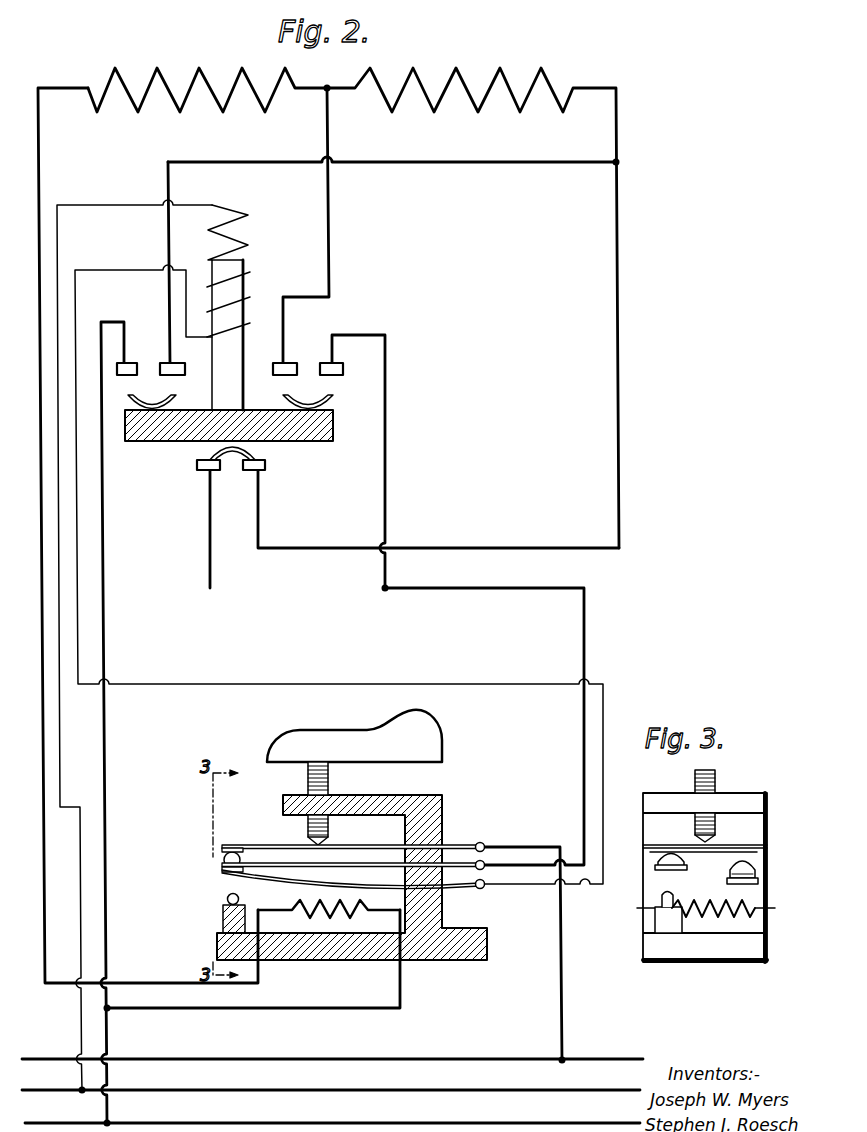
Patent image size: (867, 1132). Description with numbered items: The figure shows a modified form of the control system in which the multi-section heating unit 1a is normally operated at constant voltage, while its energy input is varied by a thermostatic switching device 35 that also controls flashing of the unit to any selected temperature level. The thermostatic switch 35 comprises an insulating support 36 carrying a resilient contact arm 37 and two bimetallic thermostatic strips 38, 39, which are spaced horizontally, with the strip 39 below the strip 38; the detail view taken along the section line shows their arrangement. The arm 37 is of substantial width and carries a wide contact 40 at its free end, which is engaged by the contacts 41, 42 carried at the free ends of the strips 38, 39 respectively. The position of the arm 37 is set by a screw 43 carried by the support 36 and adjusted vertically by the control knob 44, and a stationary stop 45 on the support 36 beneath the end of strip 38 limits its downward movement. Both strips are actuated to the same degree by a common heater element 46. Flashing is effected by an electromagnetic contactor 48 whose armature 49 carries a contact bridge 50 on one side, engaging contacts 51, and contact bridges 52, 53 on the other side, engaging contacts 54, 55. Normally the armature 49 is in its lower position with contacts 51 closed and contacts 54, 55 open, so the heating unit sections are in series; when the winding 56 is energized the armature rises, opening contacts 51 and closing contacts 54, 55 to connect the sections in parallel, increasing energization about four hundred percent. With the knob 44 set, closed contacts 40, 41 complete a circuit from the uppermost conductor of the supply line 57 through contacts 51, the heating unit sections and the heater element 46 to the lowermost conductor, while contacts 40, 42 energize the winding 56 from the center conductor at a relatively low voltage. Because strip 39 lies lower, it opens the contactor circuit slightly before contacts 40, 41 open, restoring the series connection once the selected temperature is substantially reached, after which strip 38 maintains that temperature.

In FIG. 2, the multi-section heating unit 1a is at (296, 86).
In FIG. 2, the thermostatic switching device 35 is at (480, 795).
In FIG. 2, the insulating support 36 is at (443, 914).
In FIG. 3, the insulating support 36 is at (768, 813).
In FIG. 2, the resilient contact arm 37 is at (361, 841).
In FIG. 2, the thermostatic strip 38 is at (306, 866).
In FIG. 3, the thermostatic strip 38 is at (667, 872).
In FIG. 2, the thermostatic strip 39 is at (286, 880).
In FIG. 3, the thermostatic strip 39 is at (741, 880).
In FIG. 2, the contact 40 is at (220, 850).
In FIG. 3, the contact 40 is at (762, 851).
In FIG. 2, the contact 41 is at (225, 856).
In FIG. 3, the contact 41 is at (664, 858).
In FIG. 2, the contact 42 is at (226, 869).
In FIG. 3, the contact 42 is at (748, 874).
In FIG. 2, the screw 43 is at (330, 790).
In FIG. 3, the screw 43 is at (716, 772).
In FIG. 2, the control knob 44 is at (326, 733).
In FIG. 2, the stationary stop 45 is at (231, 896).
In FIG. 3, the stationary stop 45 is at (660, 913).
In FIG. 2, the heater element 46 is at (352, 912).
In FIG. 3, the heater element 46 is at (708, 918).
In FIG. 2, the electromagnetic contactor 48 is at (296, 259).
In FIG. 2, the armature 49 is at (292, 442).
In FIG. 2, the contact bridge 50 is at (207, 453).
In FIG. 2, the contacts 51 is at (245, 470).
In FIG. 2, the contact bridge 52 is at (178, 403).
In FIG. 2, the contact bridge 53 is at (335, 404).
In FIG. 2, the contacts 54 is at (170, 363).
In FIG. 2, the contacts 55 is at (326, 361).
In FIG. 2, the winding 56 is at (235, 215).
In FIG. 2, the supply line 57 is at (583, 1124).